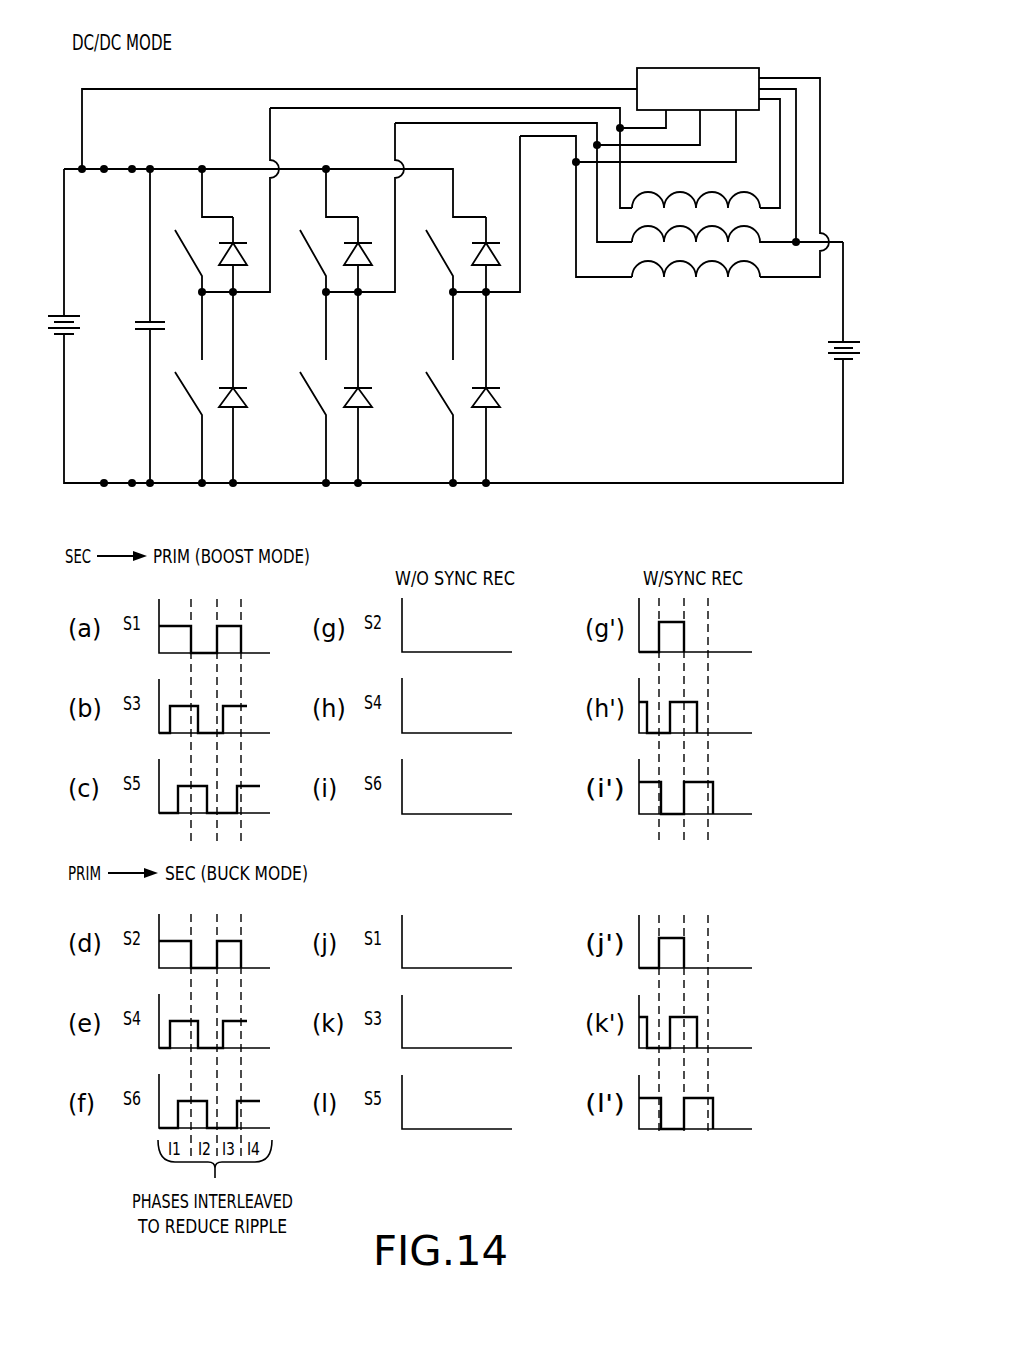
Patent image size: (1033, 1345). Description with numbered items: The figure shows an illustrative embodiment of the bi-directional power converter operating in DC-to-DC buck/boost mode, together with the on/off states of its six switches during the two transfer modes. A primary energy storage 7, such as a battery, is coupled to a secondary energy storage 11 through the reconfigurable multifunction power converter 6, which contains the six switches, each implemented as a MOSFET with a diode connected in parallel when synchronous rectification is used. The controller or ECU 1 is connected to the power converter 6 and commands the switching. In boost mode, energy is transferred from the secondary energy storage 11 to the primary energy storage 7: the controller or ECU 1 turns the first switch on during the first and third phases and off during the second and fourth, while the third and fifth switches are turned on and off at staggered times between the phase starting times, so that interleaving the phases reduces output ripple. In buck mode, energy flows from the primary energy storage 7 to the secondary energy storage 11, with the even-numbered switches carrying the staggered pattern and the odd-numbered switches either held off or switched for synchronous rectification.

The controller or ECU 1 is at (648, 68).
The reconfigurable multifunction power converter 6 is at (524, 344).
The primary energy storage 7 is at (80, 337).
The secondary energy storage 11 is at (827, 363).